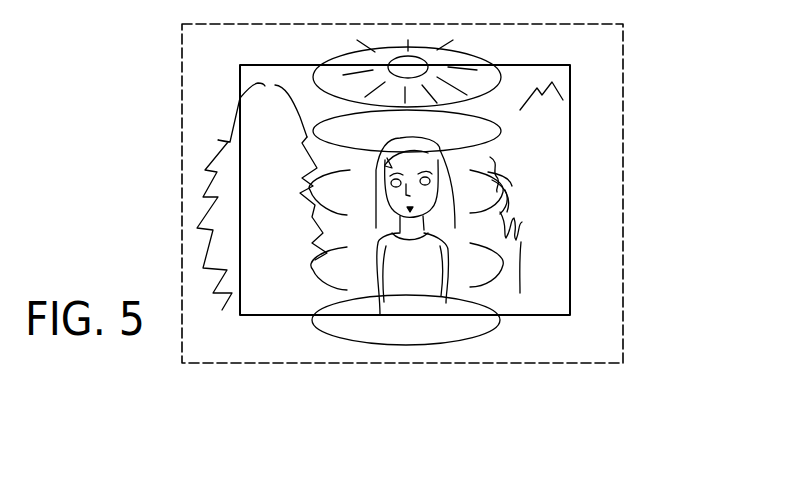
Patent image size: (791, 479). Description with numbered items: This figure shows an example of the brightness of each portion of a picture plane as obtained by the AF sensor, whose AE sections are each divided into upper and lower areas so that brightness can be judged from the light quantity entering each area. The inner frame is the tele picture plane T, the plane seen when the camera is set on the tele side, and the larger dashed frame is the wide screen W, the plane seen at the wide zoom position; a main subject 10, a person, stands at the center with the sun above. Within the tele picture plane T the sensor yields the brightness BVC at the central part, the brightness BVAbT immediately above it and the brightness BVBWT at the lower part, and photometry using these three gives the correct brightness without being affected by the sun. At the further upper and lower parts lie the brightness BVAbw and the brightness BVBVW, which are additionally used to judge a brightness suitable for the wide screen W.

The wide screen W is at (273, 365).
The tele picture plane T is at (555, 315).
The main subject (person) 10 is at (413, 305).
The brightness at the further upper part BVAbw is at (500, 76).
The brightness immediately above the central part BVAbT is at (500, 132).
The brightness at the central part BVC is at (503, 190).
The brightness at the lower part BVBWT is at (503, 270).
The brightness at the further lower part BVBVW is at (500, 327).